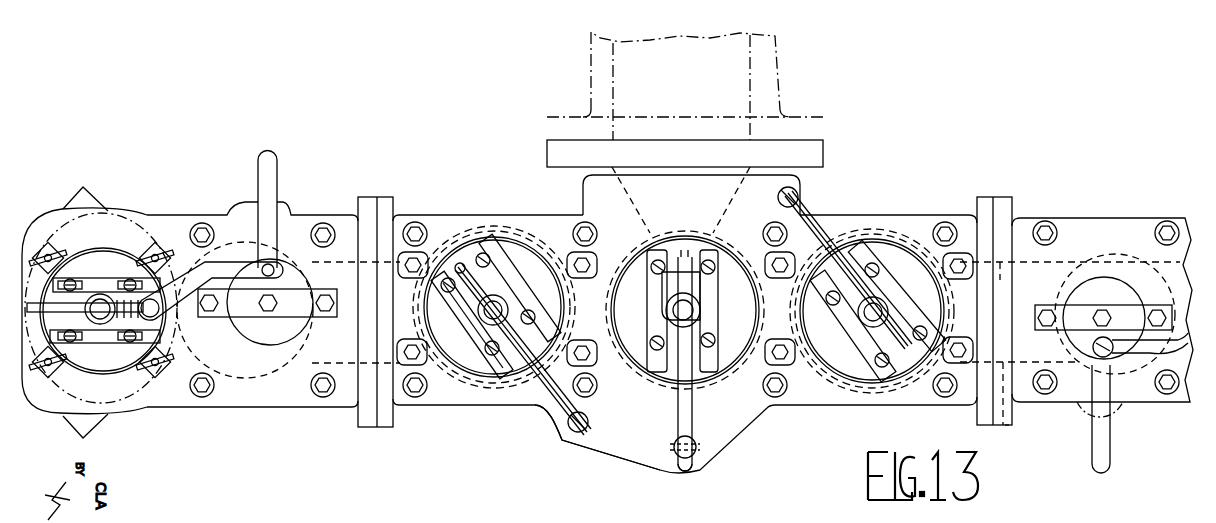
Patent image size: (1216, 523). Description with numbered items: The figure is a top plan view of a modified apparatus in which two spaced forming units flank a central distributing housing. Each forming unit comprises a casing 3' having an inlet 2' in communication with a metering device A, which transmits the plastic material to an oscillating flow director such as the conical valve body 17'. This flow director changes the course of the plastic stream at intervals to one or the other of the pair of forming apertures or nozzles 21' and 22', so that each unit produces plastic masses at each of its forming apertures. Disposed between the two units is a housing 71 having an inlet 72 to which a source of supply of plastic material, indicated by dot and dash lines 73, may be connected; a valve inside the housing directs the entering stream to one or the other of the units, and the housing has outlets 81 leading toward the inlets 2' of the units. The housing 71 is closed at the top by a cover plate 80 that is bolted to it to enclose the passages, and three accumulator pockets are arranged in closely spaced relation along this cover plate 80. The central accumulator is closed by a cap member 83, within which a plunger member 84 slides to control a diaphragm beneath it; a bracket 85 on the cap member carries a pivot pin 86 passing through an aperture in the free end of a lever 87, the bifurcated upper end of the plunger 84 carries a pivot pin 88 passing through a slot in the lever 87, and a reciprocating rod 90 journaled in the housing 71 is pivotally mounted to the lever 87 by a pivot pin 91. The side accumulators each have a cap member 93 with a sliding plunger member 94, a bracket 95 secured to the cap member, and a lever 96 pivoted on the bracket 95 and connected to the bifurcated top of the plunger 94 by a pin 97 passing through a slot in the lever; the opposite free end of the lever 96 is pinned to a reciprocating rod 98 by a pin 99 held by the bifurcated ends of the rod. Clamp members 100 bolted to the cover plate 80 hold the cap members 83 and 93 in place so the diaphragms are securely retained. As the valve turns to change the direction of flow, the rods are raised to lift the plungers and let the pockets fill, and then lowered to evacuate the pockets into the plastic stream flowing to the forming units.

The metering device A is at (262, 388).
The inlet 2' is at (678, 333).
The casing 3' is at (676, 308).
The conical valve body 17' is at (152, 337).
The forming aperture 21' is at (99, 444).
The forming aperture 22' is at (161, 208).
The housing 71 is at (588, 173).
The inlet 72 is at (748, 157).
The source of supply 73 is at (748, 100).
The cover plate 80 is at (638, 450).
The outlet 81 is at (1010, 425).
The cap member 83 is at (636, 362).
The plunger member 84 is at (662, 306).
The bracket 85 is at (656, 290).
The pivot pin 86 is at (716, 272).
The lever 87 is at (688, 412).
The pivot pin 88 is at (700, 310).
The reciprocating rod 90 is at (678, 457).
The pivot pin 91 is at (708, 452).
The cap member 93 is at (462, 363).
The plunger member 94 is at (488, 330).
The bracket 95 is at (513, 262).
The lever 96 is at (568, 418).
The pin 97 is at (518, 298).
The reciprocating rod 98 is at (570, 418).
The pin 99 is at (778, 205).
The clamp member 100 is at (425, 320).